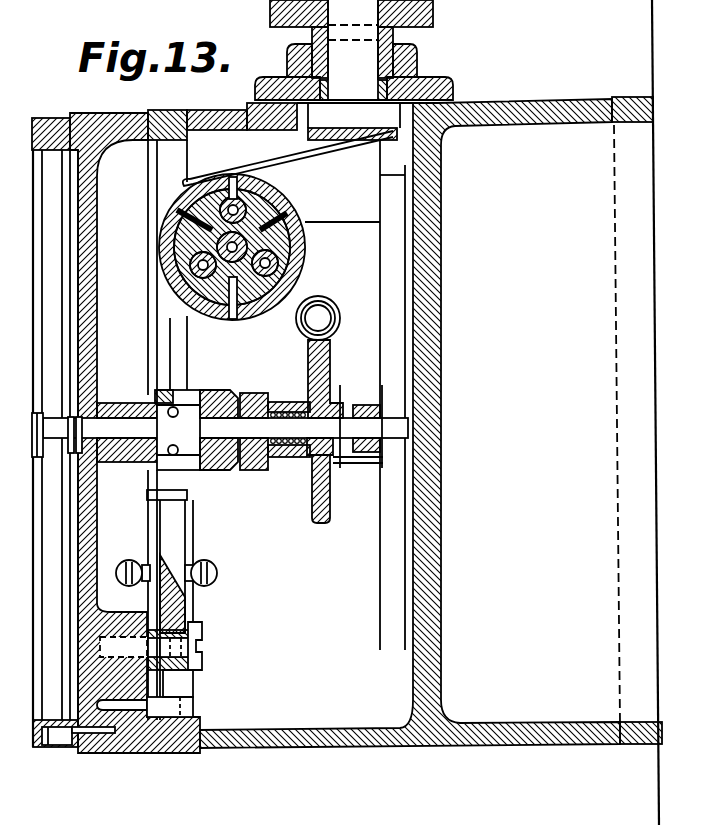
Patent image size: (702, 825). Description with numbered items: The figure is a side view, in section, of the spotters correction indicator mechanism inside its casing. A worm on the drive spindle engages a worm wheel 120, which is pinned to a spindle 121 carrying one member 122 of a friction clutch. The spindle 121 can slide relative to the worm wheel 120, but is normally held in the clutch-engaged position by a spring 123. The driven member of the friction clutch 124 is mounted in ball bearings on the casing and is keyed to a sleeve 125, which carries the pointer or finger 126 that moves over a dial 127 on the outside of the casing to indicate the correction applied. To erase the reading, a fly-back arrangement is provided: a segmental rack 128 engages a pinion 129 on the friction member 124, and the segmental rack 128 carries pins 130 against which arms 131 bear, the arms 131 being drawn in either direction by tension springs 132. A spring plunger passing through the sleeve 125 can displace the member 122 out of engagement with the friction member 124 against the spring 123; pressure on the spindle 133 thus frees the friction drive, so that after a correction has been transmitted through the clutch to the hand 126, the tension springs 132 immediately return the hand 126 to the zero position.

The worm wheel 120 is at (320, 525).
The spindle 121 is at (362, 432).
The friction clutch member 122 is at (220, 462).
The spring 123 is at (288, 403).
The driven member of the friction clutch 124 is at (215, 393).
The sleeve 125 is at (118, 425).
The pointer or finger 126 is at (70, 268).
The dial 127 is at (88, 193).
The segmental rack 128 is at (170, 540).
The pinion 129 is at (163, 393).
The pins 130 is at (188, 502).
The arms 131 is at (147, 533).
The tension springs 132 is at (125, 567).
The spindle 133 is at (45, 453).